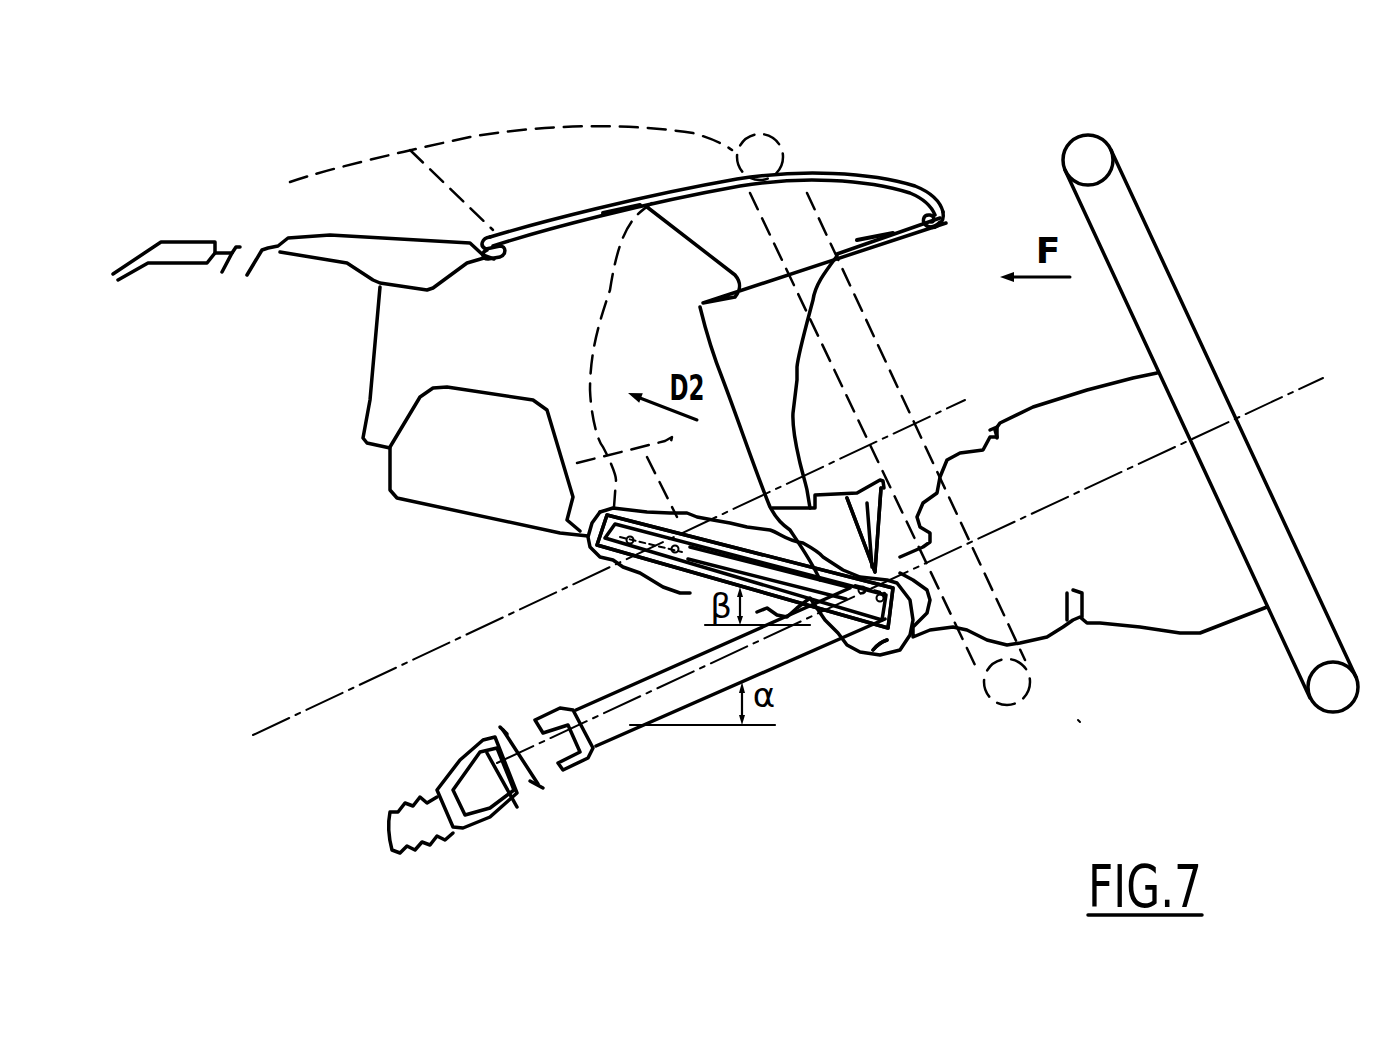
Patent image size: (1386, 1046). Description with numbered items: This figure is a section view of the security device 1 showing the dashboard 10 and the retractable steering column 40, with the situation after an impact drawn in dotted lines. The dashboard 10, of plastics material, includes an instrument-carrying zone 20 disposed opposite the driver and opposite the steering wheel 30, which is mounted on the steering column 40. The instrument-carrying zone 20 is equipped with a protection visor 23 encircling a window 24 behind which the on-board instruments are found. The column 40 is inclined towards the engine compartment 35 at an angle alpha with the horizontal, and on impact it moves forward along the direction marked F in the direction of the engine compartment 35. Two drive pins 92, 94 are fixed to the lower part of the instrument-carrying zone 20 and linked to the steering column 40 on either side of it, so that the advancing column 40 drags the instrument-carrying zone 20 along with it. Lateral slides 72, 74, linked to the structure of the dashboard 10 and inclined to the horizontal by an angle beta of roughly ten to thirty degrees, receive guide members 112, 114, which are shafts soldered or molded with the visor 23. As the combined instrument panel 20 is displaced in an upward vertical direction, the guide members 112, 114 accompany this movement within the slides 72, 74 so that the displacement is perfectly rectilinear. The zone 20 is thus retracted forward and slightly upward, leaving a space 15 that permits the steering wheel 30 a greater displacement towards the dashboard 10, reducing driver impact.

The security device 1 is at (1087, 728).
The dashboard 10 is at (313, 277).
The space 15 is at (788, 570).
The instrument-carrying zone 20 is at (641, 124).
The protection visor 23 is at (950, 226).
The window 24 is at (608, 288).
The steering wheel 30 is at (1150, 272).
The engine compartment 35 is at (597, 720).
The steering column 40 is at (1040, 637).
The lateral slide 72 is at (733, 563).
The lateral slide 74 is at (745, 571).
The drive pin 92 is at (943, 488).
The drive pin 94 is at (864, 530).
The guide member 112 is at (883, 643).
The guide member 114 is at (880, 645).